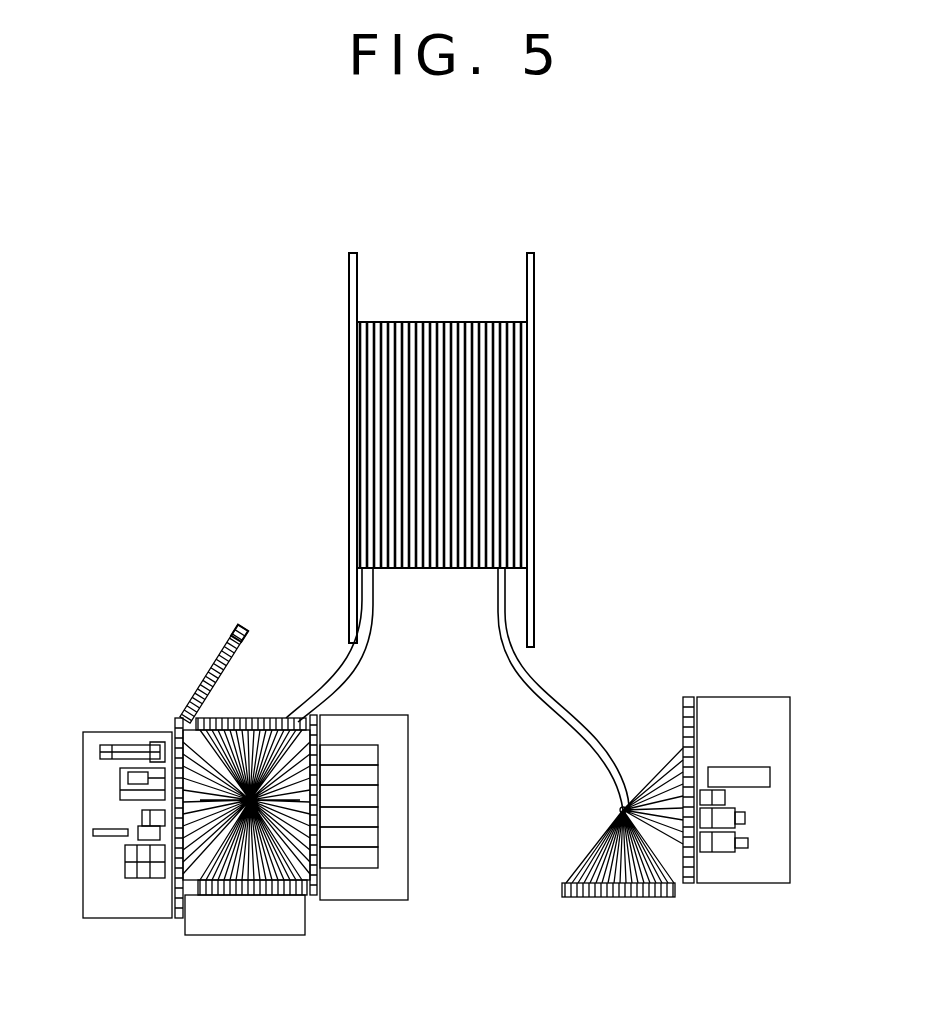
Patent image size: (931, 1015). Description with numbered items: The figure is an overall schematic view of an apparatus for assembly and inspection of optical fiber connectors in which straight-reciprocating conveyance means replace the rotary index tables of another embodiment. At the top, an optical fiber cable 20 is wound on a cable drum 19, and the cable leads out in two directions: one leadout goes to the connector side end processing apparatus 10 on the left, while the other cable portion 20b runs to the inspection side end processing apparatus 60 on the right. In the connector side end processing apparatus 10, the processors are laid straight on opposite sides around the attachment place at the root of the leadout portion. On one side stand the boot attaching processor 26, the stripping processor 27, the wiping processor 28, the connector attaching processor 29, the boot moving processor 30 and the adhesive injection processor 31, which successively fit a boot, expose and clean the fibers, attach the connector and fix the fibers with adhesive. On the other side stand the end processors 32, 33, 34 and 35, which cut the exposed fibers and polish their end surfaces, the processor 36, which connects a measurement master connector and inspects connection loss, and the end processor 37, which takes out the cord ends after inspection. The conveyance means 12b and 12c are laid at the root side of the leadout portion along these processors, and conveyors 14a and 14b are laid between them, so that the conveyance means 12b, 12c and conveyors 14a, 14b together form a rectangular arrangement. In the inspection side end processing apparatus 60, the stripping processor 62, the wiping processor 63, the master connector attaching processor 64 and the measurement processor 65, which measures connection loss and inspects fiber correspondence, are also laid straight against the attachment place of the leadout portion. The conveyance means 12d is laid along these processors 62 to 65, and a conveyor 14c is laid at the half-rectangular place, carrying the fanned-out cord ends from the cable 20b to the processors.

The connector side end processing apparatus 10 is at (177, 657).
The cable drum 19 is at (541, 405).
The optical fiber cable 20 is at (331, 692).
The optical fiber cable 20b is at (566, 708).
The processor 26 is at (126, 732).
The processor 27 is at (118, 770).
The processor 28 is at (128, 795).
The processor 29 is at (140, 818).
The processor 30 is at (106, 836).
The processor 31 is at (126, 870).
The conveyance means 12b is at (178, 920).
The conveyance means 12c is at (315, 896).
The conveyance means 12d is at (686, 697).
The conveyor 14a is at (283, 710).
The conveyor 14b is at (273, 895).
The conveyor 14c is at (565, 898).
The end processor 32 is at (378, 866).
The end processor 33 is at (378, 838).
The end processor 34 is at (378, 816).
The end processor 35 is at (378, 792).
The processor 36 is at (378, 772).
The end processor 37 is at (378, 752).
The inspection side end processing apparatus 60 is at (751, 895).
The processor 62 is at (748, 845).
The processor 63 is at (755, 818).
The processor 64 is at (726, 798).
The processor 65 is at (768, 768).